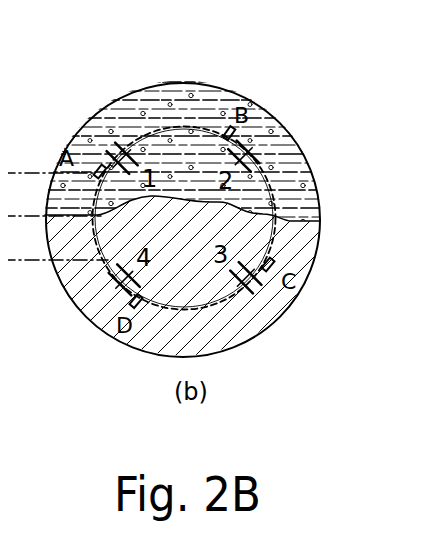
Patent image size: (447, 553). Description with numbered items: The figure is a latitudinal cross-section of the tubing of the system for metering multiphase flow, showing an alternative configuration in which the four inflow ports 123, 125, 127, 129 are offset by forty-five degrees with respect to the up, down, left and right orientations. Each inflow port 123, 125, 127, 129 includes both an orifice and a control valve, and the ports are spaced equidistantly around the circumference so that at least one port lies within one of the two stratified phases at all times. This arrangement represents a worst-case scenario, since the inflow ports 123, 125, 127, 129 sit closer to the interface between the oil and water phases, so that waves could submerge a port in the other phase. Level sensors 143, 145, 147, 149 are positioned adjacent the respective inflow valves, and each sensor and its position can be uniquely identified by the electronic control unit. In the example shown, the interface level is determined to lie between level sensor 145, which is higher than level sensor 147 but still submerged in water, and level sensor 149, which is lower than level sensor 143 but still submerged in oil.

The inflow port 123 is at (246, 156).
The inflow port 125 is at (252, 288).
The inflow port 127 is at (108, 288).
The inflow port 129 is at (118, 158).
The level sensor 143 is at (224, 129).
The level sensor 145 is at (270, 261).
The level sensor 147 is at (139, 306).
The level sensor 149 is at (93, 166).